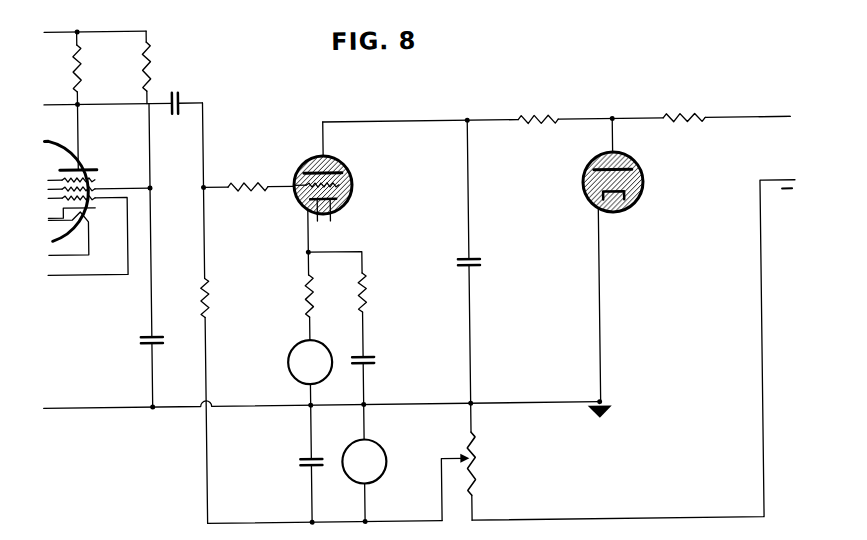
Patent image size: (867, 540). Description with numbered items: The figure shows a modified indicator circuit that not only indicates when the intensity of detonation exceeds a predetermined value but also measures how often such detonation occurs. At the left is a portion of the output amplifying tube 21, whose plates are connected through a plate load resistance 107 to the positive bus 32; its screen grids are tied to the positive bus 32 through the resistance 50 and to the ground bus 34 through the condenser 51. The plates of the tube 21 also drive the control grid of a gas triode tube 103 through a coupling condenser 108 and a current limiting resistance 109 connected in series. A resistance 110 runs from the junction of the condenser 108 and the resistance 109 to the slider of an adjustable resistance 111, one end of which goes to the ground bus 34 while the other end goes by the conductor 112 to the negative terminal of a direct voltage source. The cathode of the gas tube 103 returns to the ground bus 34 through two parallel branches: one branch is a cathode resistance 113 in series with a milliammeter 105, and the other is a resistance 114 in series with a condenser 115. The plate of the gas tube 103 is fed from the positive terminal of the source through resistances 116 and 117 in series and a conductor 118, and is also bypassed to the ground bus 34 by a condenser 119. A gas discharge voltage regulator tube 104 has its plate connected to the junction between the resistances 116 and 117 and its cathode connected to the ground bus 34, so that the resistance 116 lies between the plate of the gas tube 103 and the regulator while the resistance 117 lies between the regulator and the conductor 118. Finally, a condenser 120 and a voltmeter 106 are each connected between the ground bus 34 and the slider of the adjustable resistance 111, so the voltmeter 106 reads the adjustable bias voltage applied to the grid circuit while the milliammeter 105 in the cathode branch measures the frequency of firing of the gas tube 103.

The positive bus 32 is at (115, 29).
The plate load resistance 107 is at (74, 65).
The resistance 50 is at (143, 65).
The coupling condenser 108 is at (176, 92).
The output amplifying tube 21 is at (59, 134).
The condenser 51 is at (139, 337).
The resistance 110 is at (208, 300).
The current limiting resistance 109 is at (255, 182).
The gas triode tube 103 is at (345, 166).
The cathode resistance 113 is at (303, 290).
The milliammeter 105 is at (289, 351).
The condenser 120 is at (297, 462).
The resistance 114 is at (368, 291).
The condenser 115 is at (378, 354).
The voltmeter 106 is at (382, 451).
The ground bus 34 is at (262, 406).
The resistance 116 is at (531, 111).
The resistance 117 is at (680, 111).
The conductor 118 is at (738, 122).
The condenser 119 is at (480, 264).
The adjustable resistance 111 is at (477, 466).
The voltage regulator tube 104 is at (636, 165).
The conductor 112 is at (760, 453).